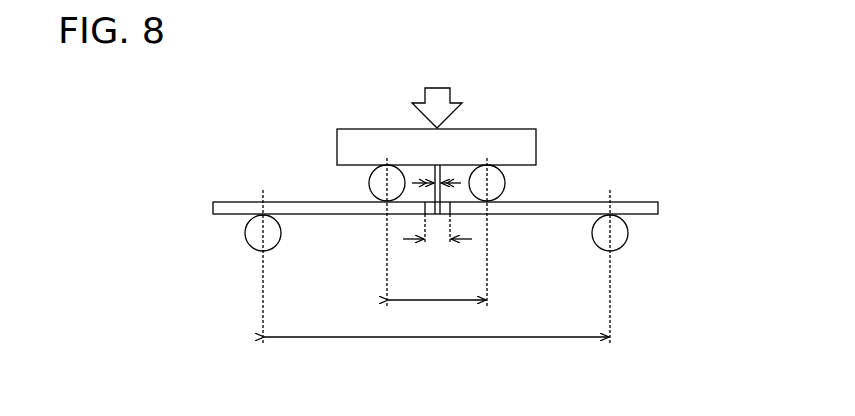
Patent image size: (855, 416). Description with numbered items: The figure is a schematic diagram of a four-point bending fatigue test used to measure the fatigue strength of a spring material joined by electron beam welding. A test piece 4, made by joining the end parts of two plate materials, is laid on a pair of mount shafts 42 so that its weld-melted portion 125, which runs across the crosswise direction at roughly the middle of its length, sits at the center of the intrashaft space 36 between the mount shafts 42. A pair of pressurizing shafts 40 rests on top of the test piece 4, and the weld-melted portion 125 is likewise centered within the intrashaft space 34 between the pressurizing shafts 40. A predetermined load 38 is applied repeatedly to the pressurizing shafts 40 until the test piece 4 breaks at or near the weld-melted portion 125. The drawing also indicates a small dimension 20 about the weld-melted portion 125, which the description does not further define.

The test piece 4 is at (634, 200).
The load 38 is at (440, 94).
The weld-melted portion 125 is at (438, 167).
The pressurizing shafts 40 is at (372, 187).
The mount shafts 42 is at (250, 228).
The slit span distance 20 is at (437, 241).
The intrashaft space 34 is at (437, 243).
The intrashaft space 36 is at (436, 276).